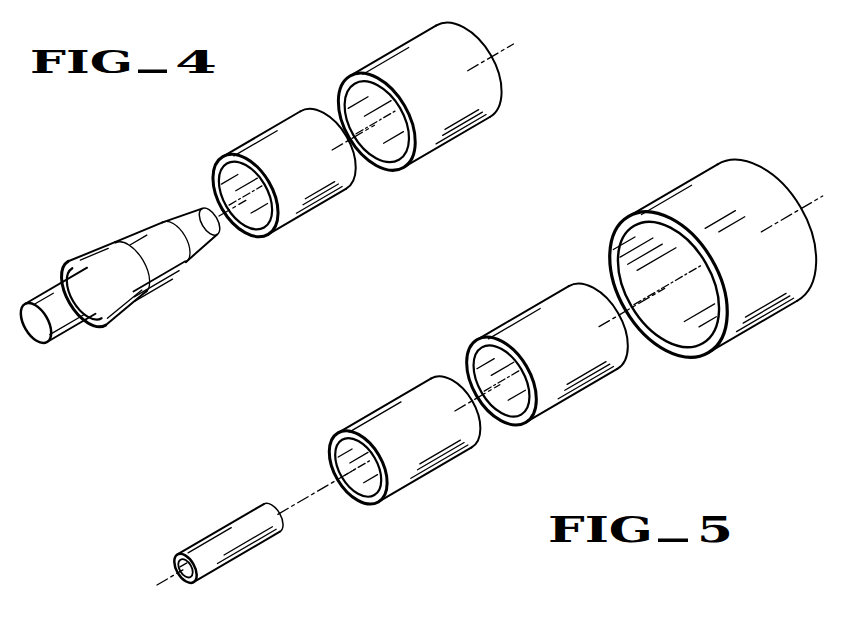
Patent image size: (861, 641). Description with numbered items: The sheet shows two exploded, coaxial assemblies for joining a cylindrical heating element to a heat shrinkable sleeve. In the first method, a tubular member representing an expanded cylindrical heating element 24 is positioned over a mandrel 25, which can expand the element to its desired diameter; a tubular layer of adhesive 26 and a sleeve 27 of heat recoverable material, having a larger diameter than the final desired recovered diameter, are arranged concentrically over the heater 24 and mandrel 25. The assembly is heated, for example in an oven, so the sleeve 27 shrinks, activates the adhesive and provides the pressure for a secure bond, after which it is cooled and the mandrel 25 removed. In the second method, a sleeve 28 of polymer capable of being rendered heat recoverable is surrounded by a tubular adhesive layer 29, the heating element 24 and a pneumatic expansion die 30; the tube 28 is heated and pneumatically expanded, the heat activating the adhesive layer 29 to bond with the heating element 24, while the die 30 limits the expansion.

In FIG. 4, the heating element 24 is at (141, 296).
In FIG. 5, the heating element 24 is at (537, 313).
In FIG. 4, the mandrel 25 is at (68, 330).
In FIG. 4, the tubular layer of adhesive 26 is at (300, 209).
In FIG. 4, the sleeve of heat recoverable material 27 is at (438, 134).
In FIG. 5, the sleeve 28 is at (222, 524).
In FIG. 5, the tubular adhesive layer 29 is at (392, 405).
In FIG. 5, the pneumatic expansion die 30 is at (687, 181).